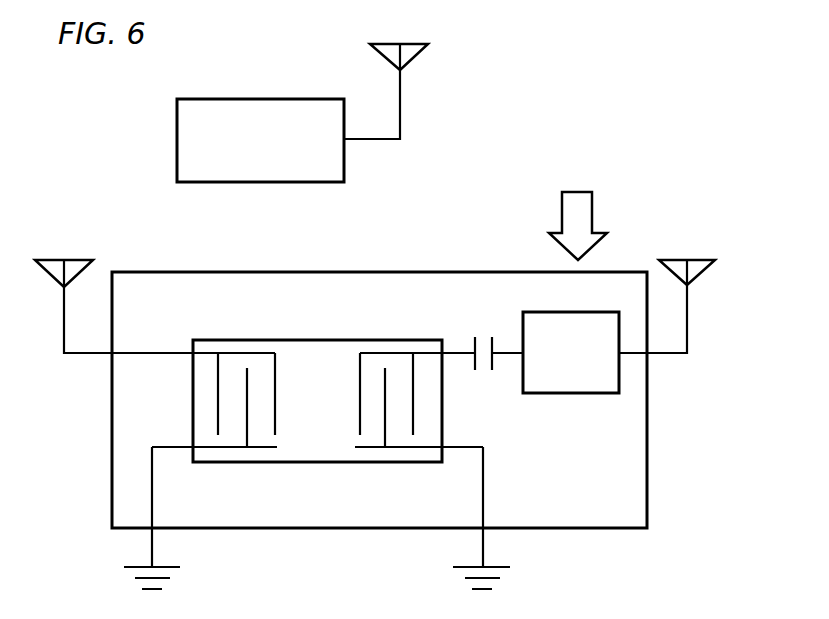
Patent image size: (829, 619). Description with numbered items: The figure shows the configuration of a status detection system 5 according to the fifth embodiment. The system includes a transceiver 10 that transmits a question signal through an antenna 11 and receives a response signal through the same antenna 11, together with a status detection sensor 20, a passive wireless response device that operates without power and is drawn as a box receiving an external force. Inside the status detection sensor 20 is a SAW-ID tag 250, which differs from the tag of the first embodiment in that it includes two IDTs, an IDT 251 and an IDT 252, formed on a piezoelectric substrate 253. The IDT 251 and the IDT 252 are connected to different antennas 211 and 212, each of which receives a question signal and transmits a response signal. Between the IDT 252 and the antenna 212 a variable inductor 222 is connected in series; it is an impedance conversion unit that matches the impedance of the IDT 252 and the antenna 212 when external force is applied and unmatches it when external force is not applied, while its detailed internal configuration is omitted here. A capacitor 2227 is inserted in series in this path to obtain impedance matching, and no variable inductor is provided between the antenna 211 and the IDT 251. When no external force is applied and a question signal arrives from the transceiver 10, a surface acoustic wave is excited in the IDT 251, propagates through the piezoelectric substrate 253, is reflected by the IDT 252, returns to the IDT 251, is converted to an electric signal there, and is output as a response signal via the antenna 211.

The status detection system 5 is at (694, 70).
The transceiver 10 is at (250, 99).
The antenna 11 is at (370, 46).
The status detection sensor 20 is at (452, 272).
The antenna 211 is at (63, 258).
The antenna 212 is at (687, 258).
The SAW-ID tag 250 is at (317, 401).
The IDT 251 is at (228, 449).
The IDT 252 is at (400, 451).
The piezoelectric substrate 253 is at (316, 446).
The variable inductor 222 is at (578, 394).
The capacitor 2227 is at (480, 373).